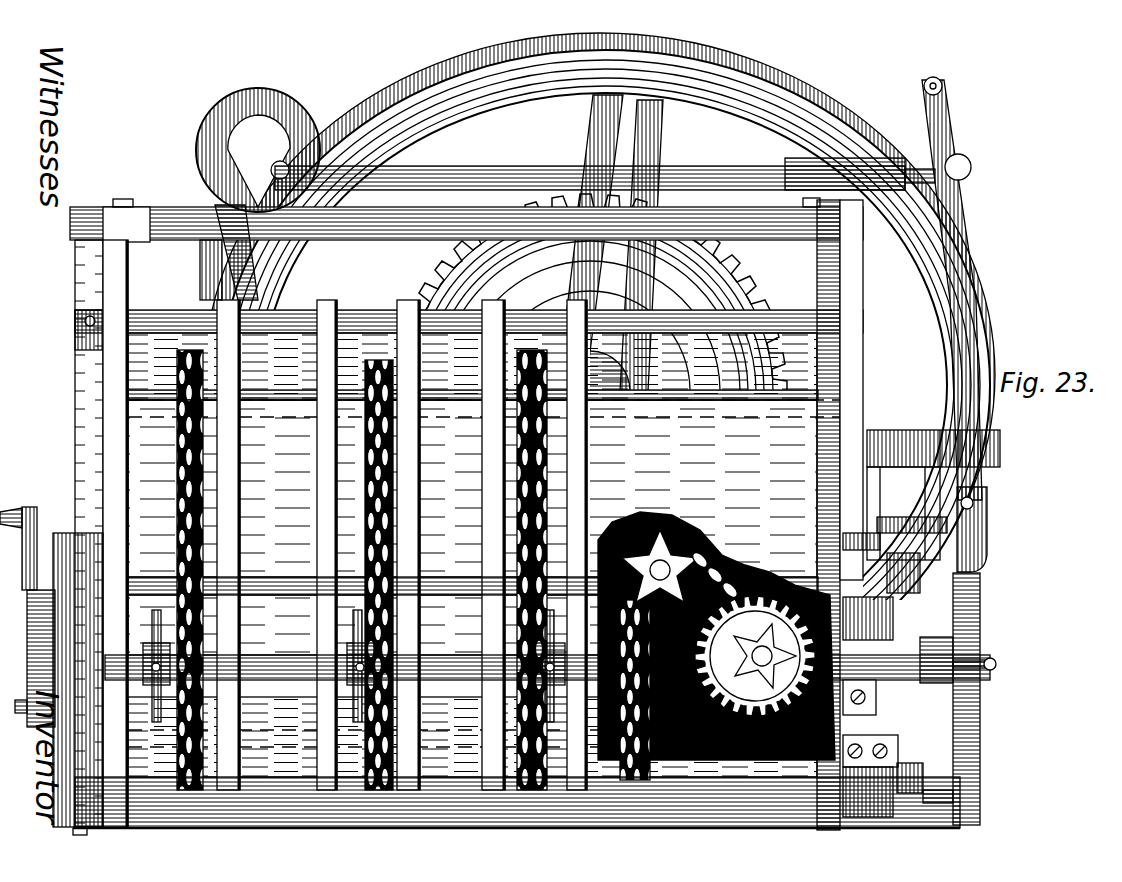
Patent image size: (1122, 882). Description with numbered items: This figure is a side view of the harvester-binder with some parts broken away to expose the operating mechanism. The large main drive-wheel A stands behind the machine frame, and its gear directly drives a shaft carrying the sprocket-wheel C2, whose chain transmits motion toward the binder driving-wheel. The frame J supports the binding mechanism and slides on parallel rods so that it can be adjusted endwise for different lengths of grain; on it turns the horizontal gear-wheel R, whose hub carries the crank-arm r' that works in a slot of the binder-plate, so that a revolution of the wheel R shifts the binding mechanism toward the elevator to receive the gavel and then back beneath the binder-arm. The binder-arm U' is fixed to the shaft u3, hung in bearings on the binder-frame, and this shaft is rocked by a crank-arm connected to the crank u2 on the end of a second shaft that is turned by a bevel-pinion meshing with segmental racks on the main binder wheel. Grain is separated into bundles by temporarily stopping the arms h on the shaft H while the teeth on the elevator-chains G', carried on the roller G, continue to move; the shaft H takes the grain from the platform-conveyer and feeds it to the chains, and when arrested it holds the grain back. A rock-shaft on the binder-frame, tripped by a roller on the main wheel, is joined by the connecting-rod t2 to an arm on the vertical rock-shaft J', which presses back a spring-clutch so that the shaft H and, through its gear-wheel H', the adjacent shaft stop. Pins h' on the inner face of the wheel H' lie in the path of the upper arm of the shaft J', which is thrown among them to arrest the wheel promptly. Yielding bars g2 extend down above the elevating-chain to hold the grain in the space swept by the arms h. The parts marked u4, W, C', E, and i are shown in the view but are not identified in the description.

The binder-arm U' is at (258, 194).
The binder-arm shaft u3 is at (508, 166).
The crank u2 is at (966, 142).
The arm u4 is at (212, 272).
The main drive-wheel A is at (990, 262).
The gear wheel W is at (582, 384).
The frame J is at (792, 586).
The roller G is at (173, 375).
The elevator-chains G' is at (171, 595).
The yielding bars g2 is at (345, 533).
The crank-arm r' is at (942, 449).
The horizontal gear-wheel R is at (895, 530).
The sprocket-wheel C2 is at (693, 587).
The sprocket C' is at (765, 666).
The gear E is at (765, 656).
The arms h is at (353, 660).
The pins h' is at (354, 682).
The shaft H is at (547, 650).
The gear-wheel H' is at (929, 669).
The connecting-rod t2 is at (991, 648).
The vertical rock-shaft J' is at (882, 751).
The block i is at (968, 768).